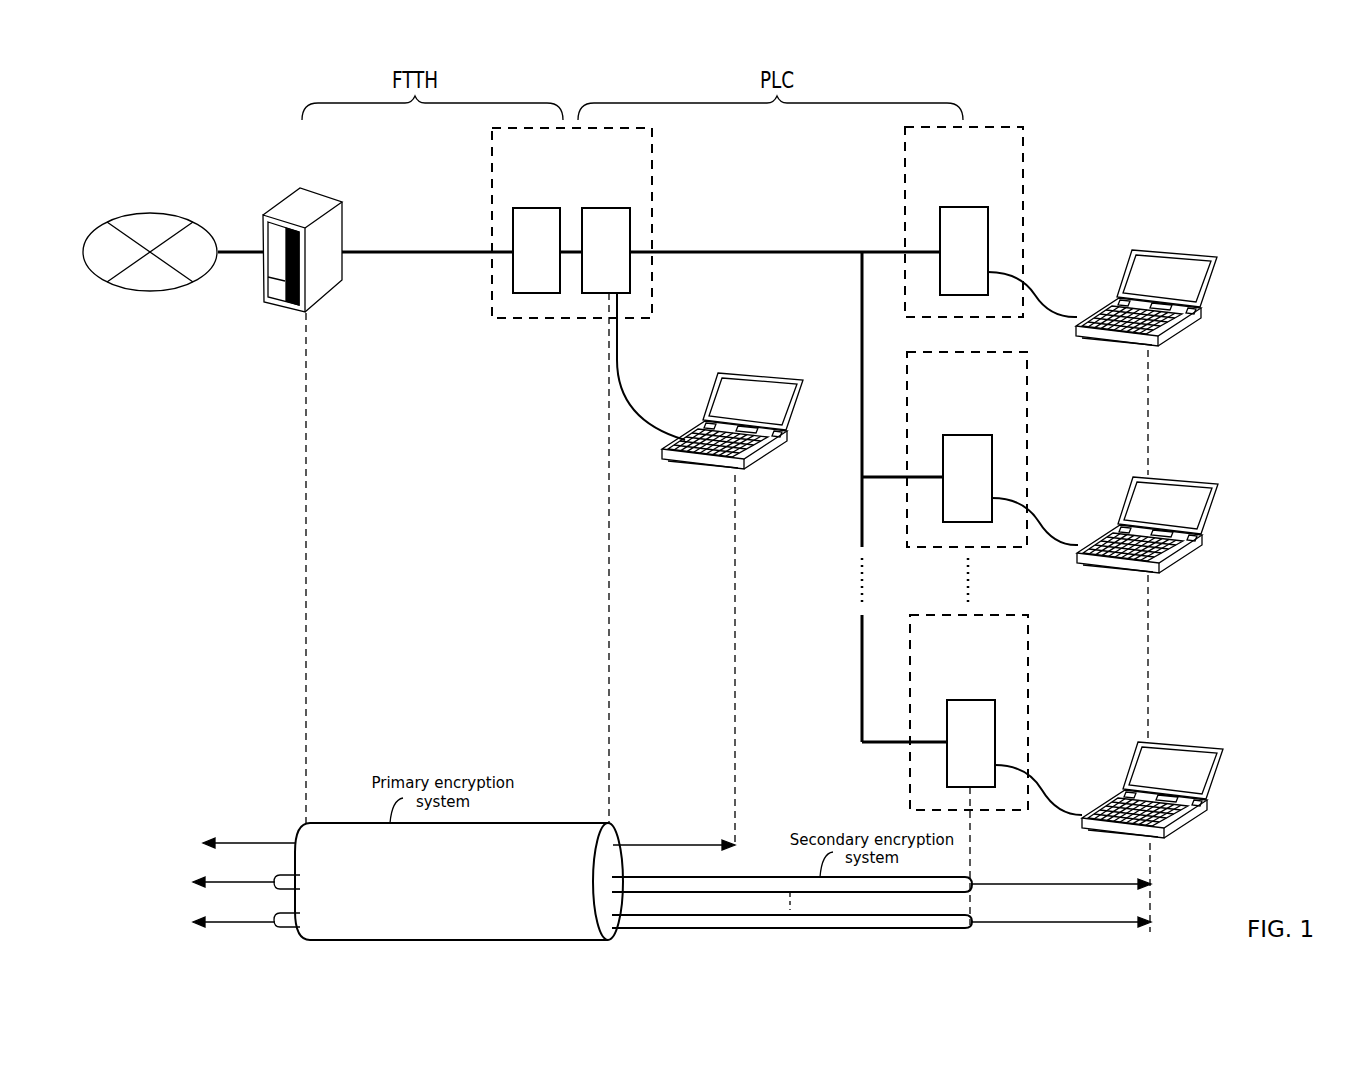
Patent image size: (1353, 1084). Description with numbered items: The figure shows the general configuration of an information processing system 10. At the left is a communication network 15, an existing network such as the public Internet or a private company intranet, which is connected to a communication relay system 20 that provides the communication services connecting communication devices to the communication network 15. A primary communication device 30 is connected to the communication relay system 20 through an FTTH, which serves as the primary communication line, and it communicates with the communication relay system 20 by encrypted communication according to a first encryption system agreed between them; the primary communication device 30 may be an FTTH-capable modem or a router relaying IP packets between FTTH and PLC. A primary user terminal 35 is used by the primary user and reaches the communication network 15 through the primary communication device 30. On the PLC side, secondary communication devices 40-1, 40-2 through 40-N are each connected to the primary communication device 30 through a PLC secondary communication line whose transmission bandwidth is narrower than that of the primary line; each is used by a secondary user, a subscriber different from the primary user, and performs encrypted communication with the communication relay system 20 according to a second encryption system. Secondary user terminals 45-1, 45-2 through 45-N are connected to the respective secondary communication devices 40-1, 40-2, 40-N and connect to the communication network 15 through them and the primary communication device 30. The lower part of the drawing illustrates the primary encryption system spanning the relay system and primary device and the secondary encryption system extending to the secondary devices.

The information processing system 10 is at (1221, 90).
The communication network 15 is at (150, 290).
The communication relay system 20 is at (323, 193).
The primary communication device 30 is at (650, 150).
The primary user terminal 35 is at (760, 373).
The secondary communication device 40-1 is at (1023, 160).
The secondary communication device 40-2 is at (1027, 388).
The secondary communication device 40-N is at (1028, 650).
The secondary user terminal 45-1 is at (1183, 250).
The secondary user terminal 45-2 is at (1187, 477).
The secondary user terminal 45-N is at (1183, 743).